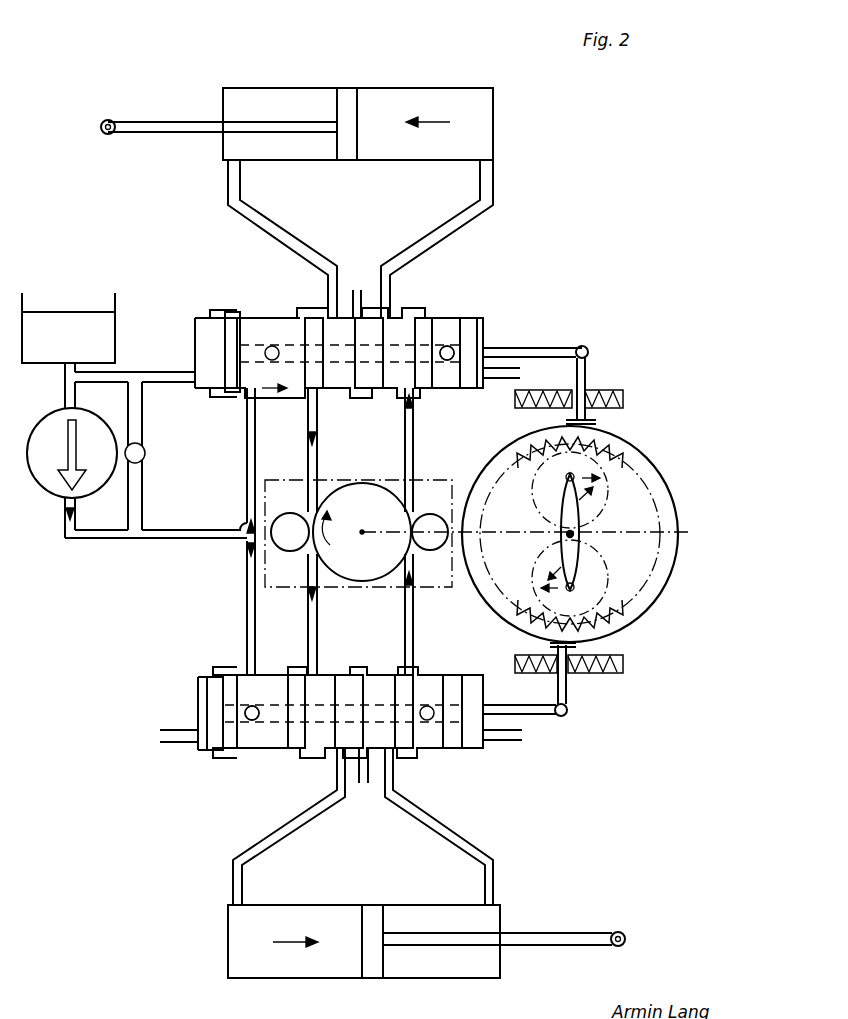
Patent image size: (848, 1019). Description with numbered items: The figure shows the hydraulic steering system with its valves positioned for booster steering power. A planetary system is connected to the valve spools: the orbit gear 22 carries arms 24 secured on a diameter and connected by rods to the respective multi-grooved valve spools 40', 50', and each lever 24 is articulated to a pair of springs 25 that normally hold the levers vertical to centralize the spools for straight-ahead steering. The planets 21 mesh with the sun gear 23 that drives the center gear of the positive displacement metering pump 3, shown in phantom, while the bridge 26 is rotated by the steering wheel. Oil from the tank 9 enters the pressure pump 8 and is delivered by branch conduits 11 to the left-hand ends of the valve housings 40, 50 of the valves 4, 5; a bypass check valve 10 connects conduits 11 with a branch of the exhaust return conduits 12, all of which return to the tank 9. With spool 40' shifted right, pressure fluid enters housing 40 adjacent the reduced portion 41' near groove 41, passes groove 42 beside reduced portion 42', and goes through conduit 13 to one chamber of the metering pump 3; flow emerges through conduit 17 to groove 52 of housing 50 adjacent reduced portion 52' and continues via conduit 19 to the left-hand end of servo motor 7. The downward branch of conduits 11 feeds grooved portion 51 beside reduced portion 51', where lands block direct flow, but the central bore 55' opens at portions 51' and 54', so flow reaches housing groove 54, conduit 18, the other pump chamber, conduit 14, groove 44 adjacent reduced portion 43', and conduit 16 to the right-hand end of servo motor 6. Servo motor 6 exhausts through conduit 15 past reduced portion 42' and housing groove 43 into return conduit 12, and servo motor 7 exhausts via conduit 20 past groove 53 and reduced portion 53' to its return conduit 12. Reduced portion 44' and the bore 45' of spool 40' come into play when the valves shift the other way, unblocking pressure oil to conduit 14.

The positive displacement metering pump 3 is at (443, 482).
The valve 4 is at (212, 308).
The valve 5 is at (162, 671).
The servo motor 6 is at (548, 116).
The servo motor 7 is at (168, 943).
The pressure pump 8 is at (55, 480).
The tank 9 is at (65, 330).
The bypass check valve 10 is at (147, 453).
The branch conduits 11 is at (222, 533).
The exhaust return conduits 12 is at (137, 380).
The conduit 13 is at (312, 472).
The conduit 14 is at (408, 458).
The conduit 15 is at (272, 233).
The conduit 16 is at (483, 200).
The conduit 17 is at (312, 618).
The conduit 18 is at (409, 616).
The conduit 19 is at (236, 860).
The conduit 20 is at (460, 840).
The planets 21 is at (576, 470).
The orbit gear 22 is at (663, 503).
The sun gear 23 is at (575, 535).
The arms 24 is at (622, 350).
The springs 25 is at (560, 388).
The bridge 26 is at (578, 515).
The valve housing 40 is at (454, 320).
The valve spool 40' is at (464, 399).
The groove 41 is at (223, 386).
The reduced portion 41' is at (272, 285).
The groove 42 is at (296, 389).
The reduced spool portion 42' is at (326, 285).
The housing groove 43 is at (364, 389).
The reduced portion 43' is at (404, 286).
The groove 44 is at (432, 389).
The reduced portion 44' is at (455, 286).
The bore 45' is at (503, 328).
The valve housing 50 is at (470, 733).
The valve spool 50' is at (458, 660).
The grooved portion 51 is at (207, 693).
The reduced portion 51' is at (253, 787).
The groove 52 is at (283, 692).
The reduced portion 52' is at (291, 792).
The groove 53 is at (351, 692).
The reduced spool portion 53' is at (370, 795).
The housing groove 54 is at (419, 692).
The reduced portion 54' is at (437, 792).
The central bore 55' is at (170, 714).